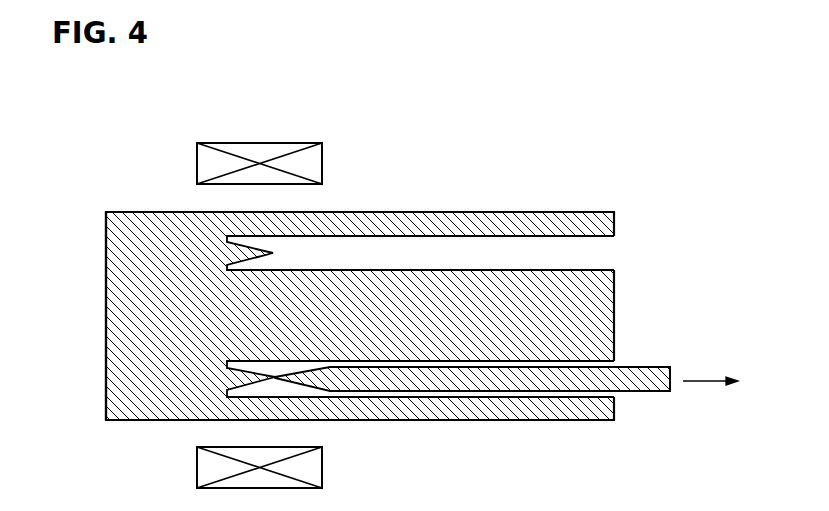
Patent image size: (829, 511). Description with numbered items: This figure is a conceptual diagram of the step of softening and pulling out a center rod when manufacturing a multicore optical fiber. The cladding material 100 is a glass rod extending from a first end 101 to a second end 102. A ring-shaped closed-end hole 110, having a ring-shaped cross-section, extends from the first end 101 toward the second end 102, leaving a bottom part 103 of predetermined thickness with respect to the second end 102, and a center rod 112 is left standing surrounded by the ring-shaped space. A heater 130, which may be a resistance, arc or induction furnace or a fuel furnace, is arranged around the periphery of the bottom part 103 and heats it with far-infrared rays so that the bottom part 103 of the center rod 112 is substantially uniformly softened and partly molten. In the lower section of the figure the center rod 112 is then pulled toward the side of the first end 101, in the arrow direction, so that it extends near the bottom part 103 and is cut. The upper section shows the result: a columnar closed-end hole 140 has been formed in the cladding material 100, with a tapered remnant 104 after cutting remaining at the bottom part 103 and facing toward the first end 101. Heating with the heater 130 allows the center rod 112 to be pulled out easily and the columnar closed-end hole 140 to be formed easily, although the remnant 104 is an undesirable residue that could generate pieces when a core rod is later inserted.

The cladding material 100 is at (460, 218).
The first end 101 is at (617, 215).
The second end 102 is at (106, 240).
The bottom part 103 is at (252, 397).
The remnant 104 is at (275, 252).
The ring-shaped closed-end hole 110 is at (502, 393).
The center rod 112 is at (647, 392).
The heater 130 is at (270, 146).
The columnar closed-end hole 140 is at (598, 253).